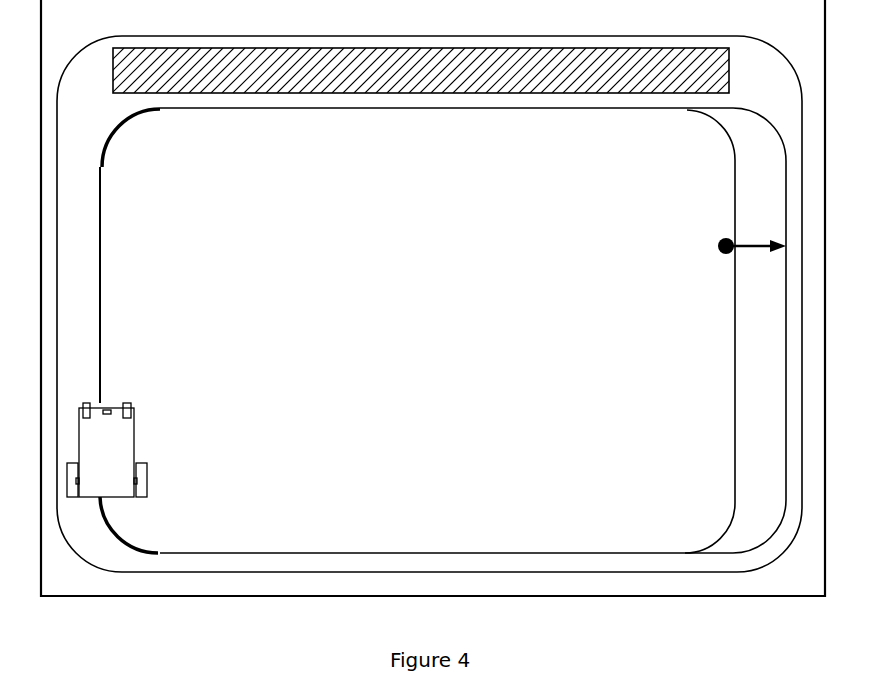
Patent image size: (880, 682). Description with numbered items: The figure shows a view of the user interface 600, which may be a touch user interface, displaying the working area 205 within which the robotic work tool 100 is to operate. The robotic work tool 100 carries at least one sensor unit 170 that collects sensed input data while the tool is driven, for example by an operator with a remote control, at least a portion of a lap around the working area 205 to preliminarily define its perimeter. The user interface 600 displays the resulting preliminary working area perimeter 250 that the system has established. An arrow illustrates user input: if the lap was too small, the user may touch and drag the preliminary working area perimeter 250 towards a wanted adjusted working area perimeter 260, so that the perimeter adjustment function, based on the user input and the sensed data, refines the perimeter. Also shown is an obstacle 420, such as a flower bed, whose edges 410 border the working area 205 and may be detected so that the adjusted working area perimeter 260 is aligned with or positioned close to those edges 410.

The user interface 600 is at (803, 22).
The obstacle 420 is at (503, 78).
The edges 410 is at (594, 96).
The preliminary working area perimeter 250 is at (735, 393).
The adjusted working area perimeter 260 is at (786, 314).
The working area 205 is at (485, 485).
The robotic work tool 100 is at (125, 450).
The sensor unit 170 is at (107, 414).